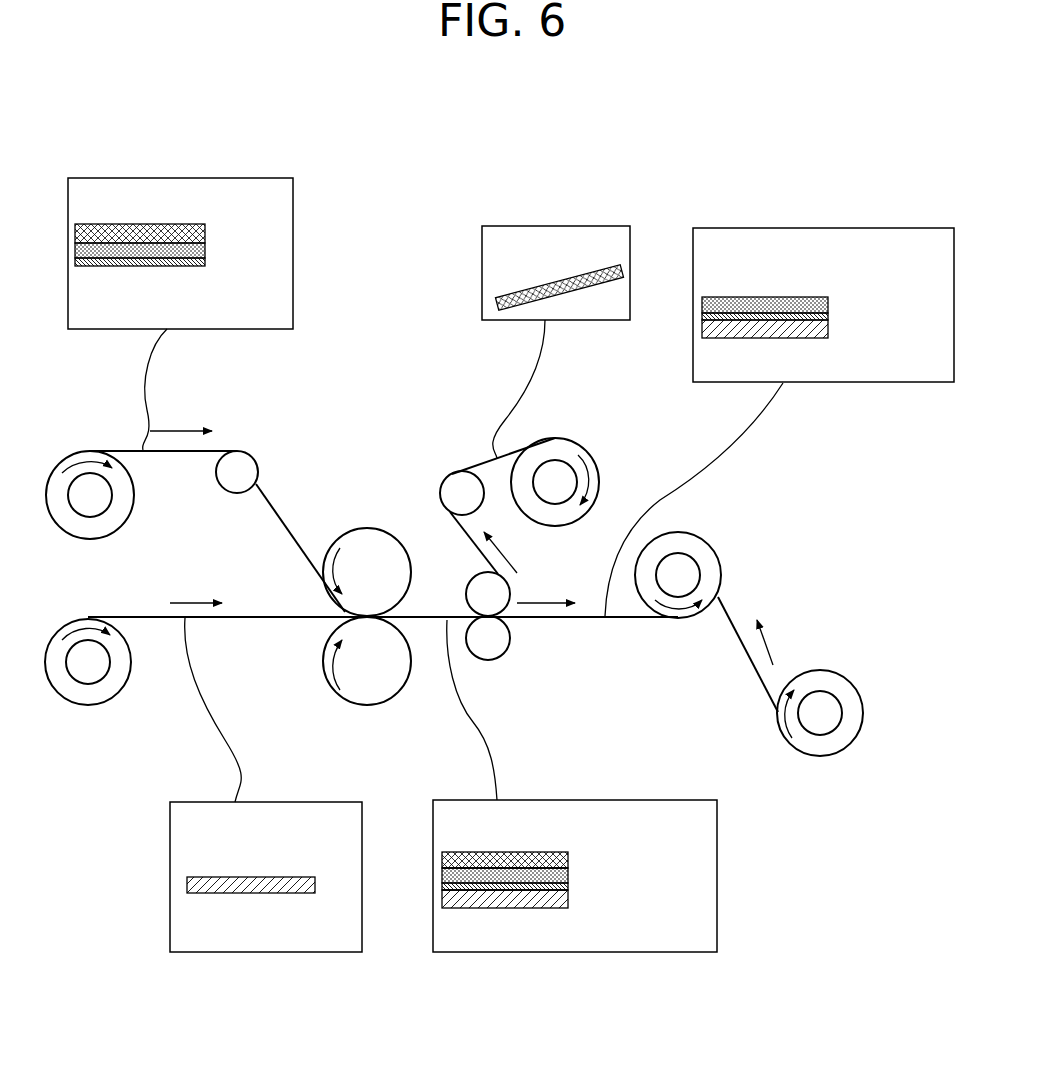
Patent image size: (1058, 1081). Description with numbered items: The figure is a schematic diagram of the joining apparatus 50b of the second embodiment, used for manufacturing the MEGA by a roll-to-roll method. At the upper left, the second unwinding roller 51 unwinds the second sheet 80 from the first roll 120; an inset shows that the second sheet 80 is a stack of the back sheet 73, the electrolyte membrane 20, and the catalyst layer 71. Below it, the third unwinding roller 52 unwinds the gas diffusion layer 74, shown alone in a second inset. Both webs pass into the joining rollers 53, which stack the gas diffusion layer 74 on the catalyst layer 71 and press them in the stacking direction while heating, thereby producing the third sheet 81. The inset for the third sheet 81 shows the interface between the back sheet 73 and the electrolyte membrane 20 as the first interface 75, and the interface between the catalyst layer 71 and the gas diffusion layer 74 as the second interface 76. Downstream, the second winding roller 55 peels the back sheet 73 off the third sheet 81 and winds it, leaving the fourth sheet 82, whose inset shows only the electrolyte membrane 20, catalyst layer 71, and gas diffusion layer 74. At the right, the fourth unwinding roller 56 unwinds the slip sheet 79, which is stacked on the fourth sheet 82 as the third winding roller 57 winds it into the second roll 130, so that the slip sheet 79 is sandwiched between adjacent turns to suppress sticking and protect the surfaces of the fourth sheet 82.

The joining apparatus 50b is at (748, 190).
The first roll 120 is at (94, 450).
The second unwinding roller 51 is at (92, 497).
The third unwinding roller 52 is at (87, 660).
The joining rollers 53 is at (390, 528).
The second winding roller 55 is at (553, 482).
The fourth unwinding roller 56 is at (820, 722).
The third winding roller 57 is at (688, 571).
The second roll 130 is at (678, 532).
The slip sheet 79 is at (822, 670).
The second sheet 80 is at (230, 296).
The third sheet 81 is at (645, 910).
The fourth sheet 82 is at (888, 338).
The back sheet 73 is at (126, 226).
The electrolyte membrane 20 is at (205, 250).
The catalyst layer 71 is at (142, 265).
The gas diffusion layer 74 is at (752, 340).
The first interface 75 is at (533, 870).
The second interface 76 is at (538, 892).